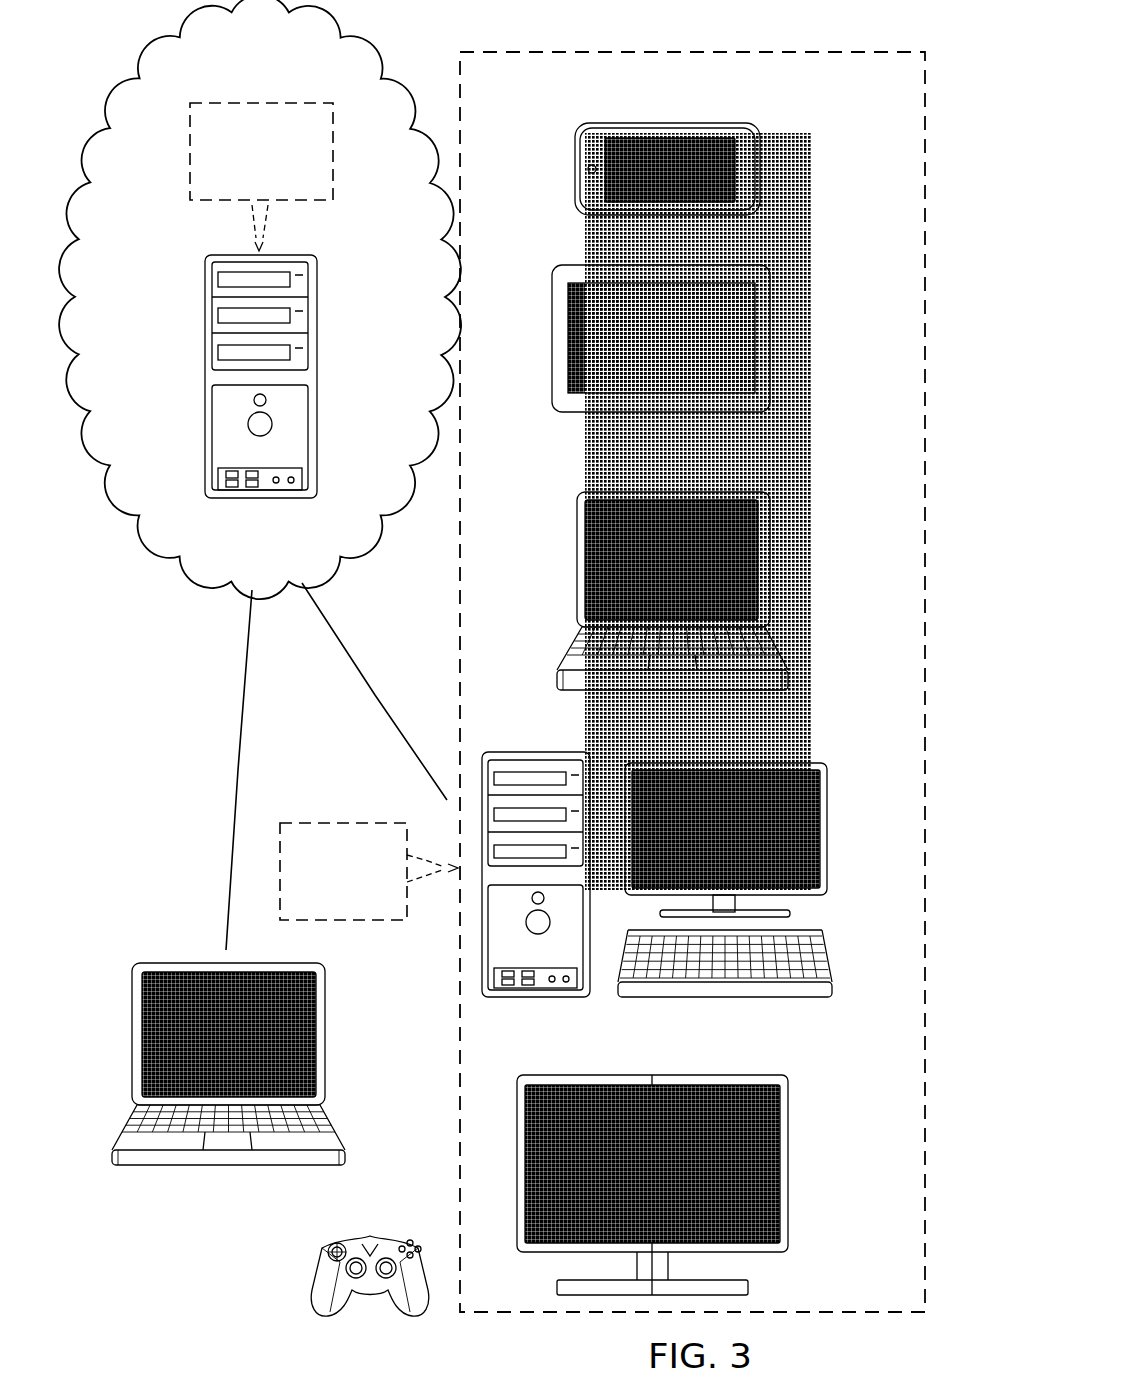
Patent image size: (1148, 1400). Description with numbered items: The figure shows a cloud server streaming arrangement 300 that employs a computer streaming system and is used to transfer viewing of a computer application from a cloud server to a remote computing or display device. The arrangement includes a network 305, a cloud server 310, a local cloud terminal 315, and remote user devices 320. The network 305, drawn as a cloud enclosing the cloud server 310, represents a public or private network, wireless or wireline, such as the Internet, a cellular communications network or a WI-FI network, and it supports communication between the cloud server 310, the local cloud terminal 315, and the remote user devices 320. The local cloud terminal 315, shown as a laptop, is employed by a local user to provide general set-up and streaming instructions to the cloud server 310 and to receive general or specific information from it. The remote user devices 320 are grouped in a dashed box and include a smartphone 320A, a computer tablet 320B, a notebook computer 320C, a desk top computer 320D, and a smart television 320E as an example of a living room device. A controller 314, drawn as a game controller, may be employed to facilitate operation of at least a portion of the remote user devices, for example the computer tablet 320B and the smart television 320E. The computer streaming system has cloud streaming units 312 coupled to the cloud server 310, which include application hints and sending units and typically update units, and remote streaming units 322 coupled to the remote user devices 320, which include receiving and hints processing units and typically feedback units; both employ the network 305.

The cloud server streaming arrangement 300 is at (168, 1255).
The network 305 is at (129, 94).
The cloud server 310 is at (317, 378).
The cloud streaming units 312 is at (333, 165).
The controller 314 is at (312, 1290).
The local cloud terminal 315 is at (132, 1035).
The remote user devices 320 is at (777, 52).
The smartphone 320A is at (760, 170).
The computer tablet 320B is at (770, 348).
The notebook computer 320C is at (770, 553).
The desk top computer 320D is at (827, 825).
The smart television 320E is at (788, 1165).
The remote streaming units 322 is at (350, 922).